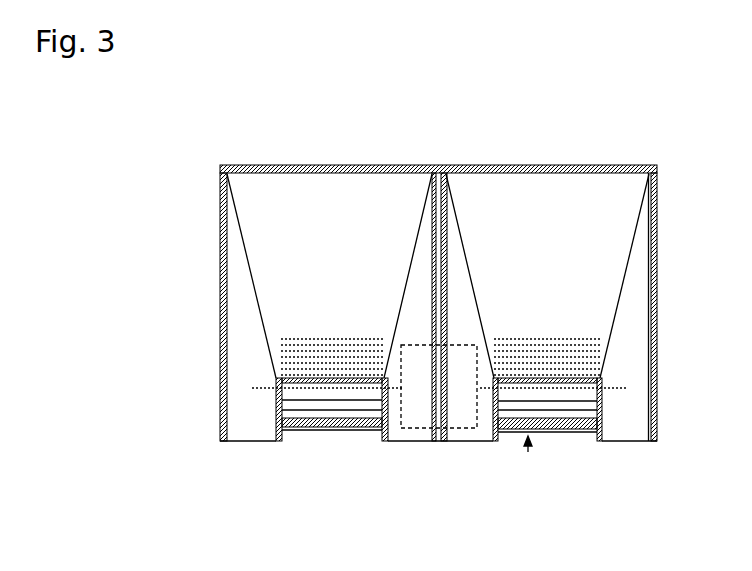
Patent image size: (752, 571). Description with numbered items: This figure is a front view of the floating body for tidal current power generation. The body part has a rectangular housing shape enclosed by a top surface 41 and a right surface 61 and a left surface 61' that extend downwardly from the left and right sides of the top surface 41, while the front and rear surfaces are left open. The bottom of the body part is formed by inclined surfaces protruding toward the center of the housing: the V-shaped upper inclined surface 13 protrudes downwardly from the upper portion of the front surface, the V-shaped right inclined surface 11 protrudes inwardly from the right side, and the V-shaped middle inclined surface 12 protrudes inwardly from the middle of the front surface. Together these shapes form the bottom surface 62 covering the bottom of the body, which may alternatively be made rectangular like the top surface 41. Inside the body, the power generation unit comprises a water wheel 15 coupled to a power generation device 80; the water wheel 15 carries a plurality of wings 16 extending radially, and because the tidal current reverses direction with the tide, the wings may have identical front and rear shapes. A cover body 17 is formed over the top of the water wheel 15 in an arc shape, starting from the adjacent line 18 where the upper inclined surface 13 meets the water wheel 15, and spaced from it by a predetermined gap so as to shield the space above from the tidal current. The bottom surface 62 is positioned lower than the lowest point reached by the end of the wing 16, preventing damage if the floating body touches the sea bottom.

The V-shaped right inclined surface 11 is at (648, 345).
The V-shaped middle inclined surface 12 is at (458, 270).
The V-shaped upper inclined surface 13 is at (565, 210).
The top surface 41 is at (453, 163).
The cover body 17 is at (552, 337).
The adjacent line 18 is at (603, 408).
The wing 16 is at (560, 431).
The water wheel 15 is at (528, 450).
The power generation device 80 is at (457, 410).
The right surface 61 is at (693, 307).
The left surface 61' is at (217, 307).
The bottom surface 62 is at (628, 443).